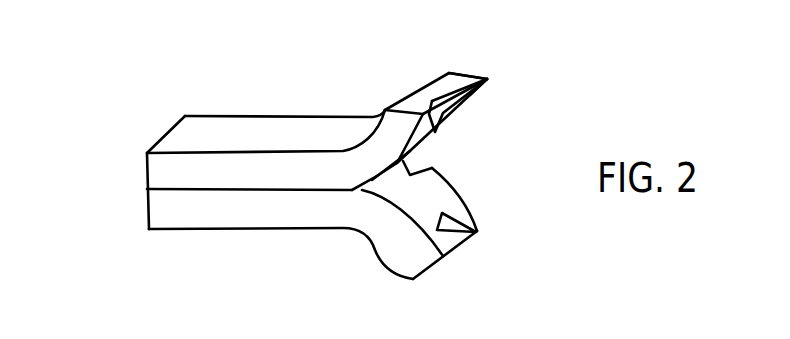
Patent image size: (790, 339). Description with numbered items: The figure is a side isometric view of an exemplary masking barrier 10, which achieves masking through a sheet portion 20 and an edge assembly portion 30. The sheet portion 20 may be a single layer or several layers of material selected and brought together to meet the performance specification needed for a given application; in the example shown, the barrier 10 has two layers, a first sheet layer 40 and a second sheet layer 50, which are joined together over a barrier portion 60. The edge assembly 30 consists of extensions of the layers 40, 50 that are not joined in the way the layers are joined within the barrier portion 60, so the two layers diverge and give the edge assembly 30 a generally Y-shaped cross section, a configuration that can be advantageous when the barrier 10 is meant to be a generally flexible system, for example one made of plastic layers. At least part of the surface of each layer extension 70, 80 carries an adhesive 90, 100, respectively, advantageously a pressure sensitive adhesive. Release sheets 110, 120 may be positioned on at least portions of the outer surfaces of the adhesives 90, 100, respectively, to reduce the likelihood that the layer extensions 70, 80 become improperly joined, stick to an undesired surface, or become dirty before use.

The barrier 10 is at (285, 89).
The sheet portion 20 is at (140, 192).
The edge assembly portion 30 is at (475, 130).
The first sheet layer 40 is at (140, 162).
The second sheet layer 50 is at (145, 214).
The barrier portion 60 is at (343, 242).
The layer extension 70 is at (412, 108).
The layer extension 80 is at (385, 228).
The adhesive 90 is at (470, 75).
The adhesive 100 is at (443, 258).
The release sheet 110 is at (448, 125).
The release sheet 120 is at (452, 209).